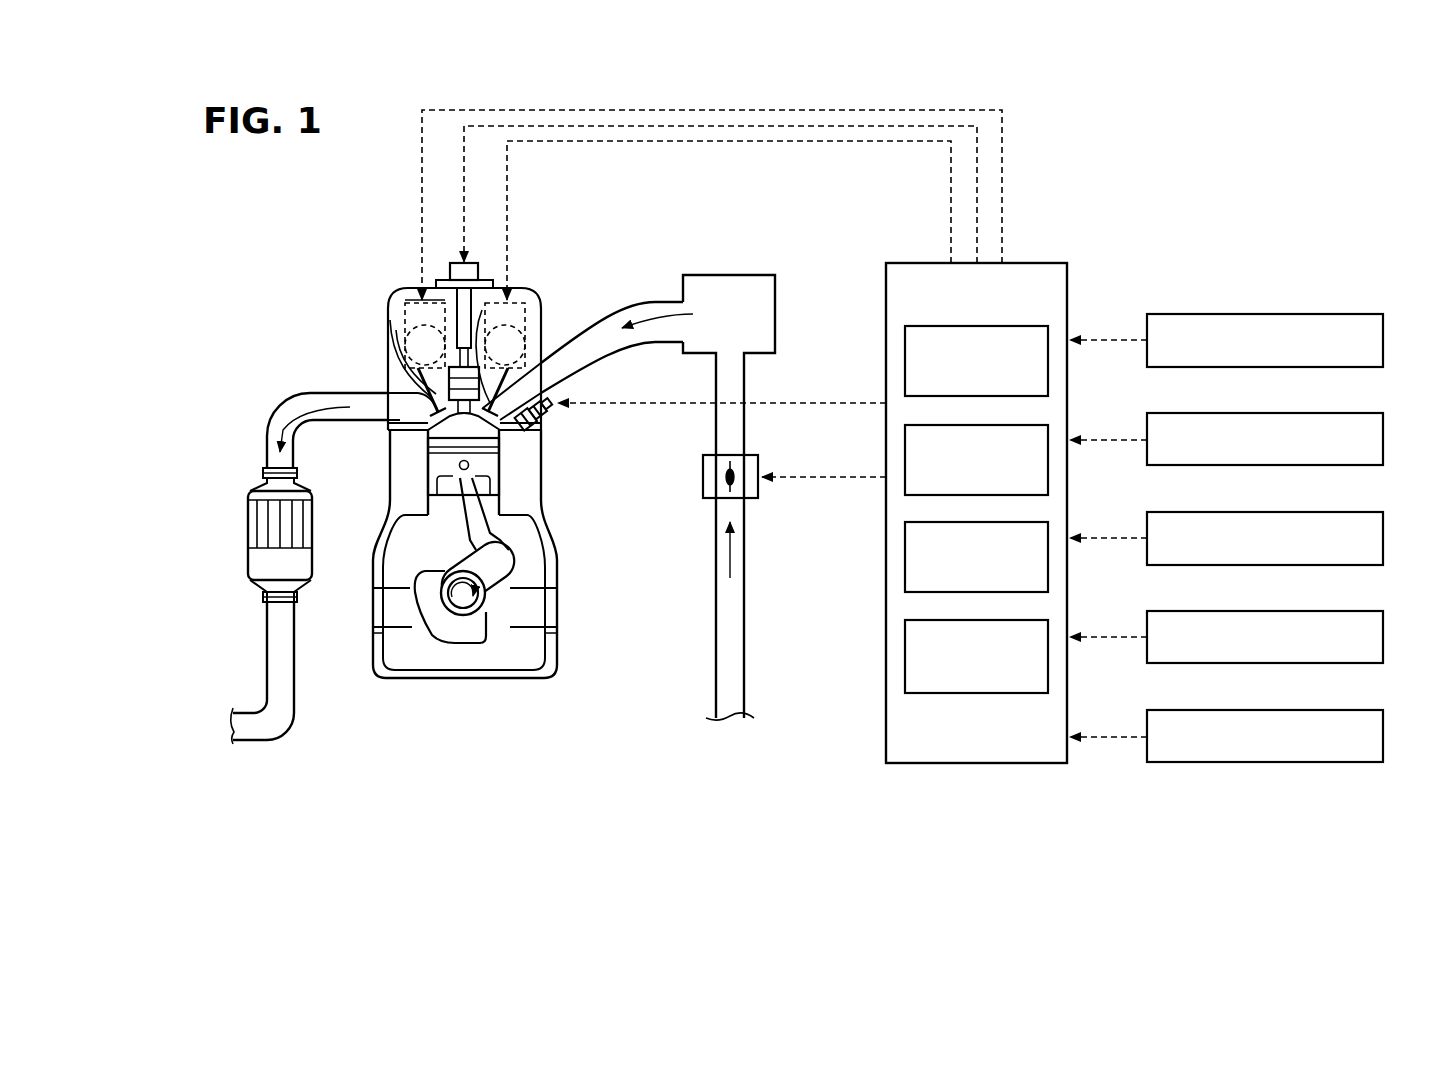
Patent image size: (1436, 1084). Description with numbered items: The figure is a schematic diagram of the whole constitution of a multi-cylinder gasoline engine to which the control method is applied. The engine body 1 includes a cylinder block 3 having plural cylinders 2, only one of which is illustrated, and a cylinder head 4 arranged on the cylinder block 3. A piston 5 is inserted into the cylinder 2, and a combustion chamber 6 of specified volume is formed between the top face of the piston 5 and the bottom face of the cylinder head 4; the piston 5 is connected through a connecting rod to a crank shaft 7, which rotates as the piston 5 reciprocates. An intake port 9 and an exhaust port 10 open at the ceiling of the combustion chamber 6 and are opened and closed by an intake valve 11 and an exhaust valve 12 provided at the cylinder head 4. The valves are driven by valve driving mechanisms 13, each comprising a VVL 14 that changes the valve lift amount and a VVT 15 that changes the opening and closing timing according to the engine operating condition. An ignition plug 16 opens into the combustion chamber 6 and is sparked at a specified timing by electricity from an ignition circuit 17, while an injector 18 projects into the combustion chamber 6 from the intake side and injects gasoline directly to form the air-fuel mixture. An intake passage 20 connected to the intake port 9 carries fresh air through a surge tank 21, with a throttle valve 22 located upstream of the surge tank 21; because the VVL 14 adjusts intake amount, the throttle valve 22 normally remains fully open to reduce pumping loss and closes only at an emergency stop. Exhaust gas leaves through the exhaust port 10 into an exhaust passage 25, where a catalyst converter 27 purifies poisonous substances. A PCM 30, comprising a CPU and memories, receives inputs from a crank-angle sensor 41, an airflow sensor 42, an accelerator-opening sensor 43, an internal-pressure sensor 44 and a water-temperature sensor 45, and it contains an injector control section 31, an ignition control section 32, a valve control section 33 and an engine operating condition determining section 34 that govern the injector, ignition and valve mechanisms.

The engine body 1 is at (574, 570).
The cylinder 2 is at (435, 497).
The cylinder block 3 is at (384, 512).
The cylinder head 4 is at (388, 384).
The piston 5 is at (440, 465).
The combustion chamber 6 is at (518, 450).
The crank shaft 7 is at (461, 608).
The intake port 9 is at (540, 378).
The exhaust port 10 is at (393, 415).
The intake valve 11 is at (471, 298).
The exhaust valve 12 is at (395, 368).
The valve driving mechanism 13 is at (402, 290).
The VVL (variable valve lift mechanism) 14 is at (405, 318).
The VVT (variable valve timing mechanism) 15 is at (408, 350).
The ignition plug 16 is at (406, 299).
The ignition circuit 17 is at (460, 262).
The injector 18 is at (541, 432).
The intake passage 20 is at (616, 318).
The surge tank 21 is at (778, 313).
The throttle valve 22 is at (722, 486).
The exhaust passage 25 is at (266, 424).
The catalyst converter 27 is at (249, 531).
The PCM (Power Control Module) 30 is at (1043, 262).
The injector control section 31 is at (1048, 367).
The ignition control section 32 is at (1048, 466).
The valve control section 33 is at (1048, 566).
The engine operating condition determining section 34 is at (1048, 665).
The crank-angle sensor 41 is at (1328, 314).
The airflow sensor 42 is at (1328, 413).
The accelerator-opening sensor 43 is at (1328, 512).
The internal-pressure sensor 44 is at (1328, 611).
The water-temperature sensor 45 is at (1328, 710).